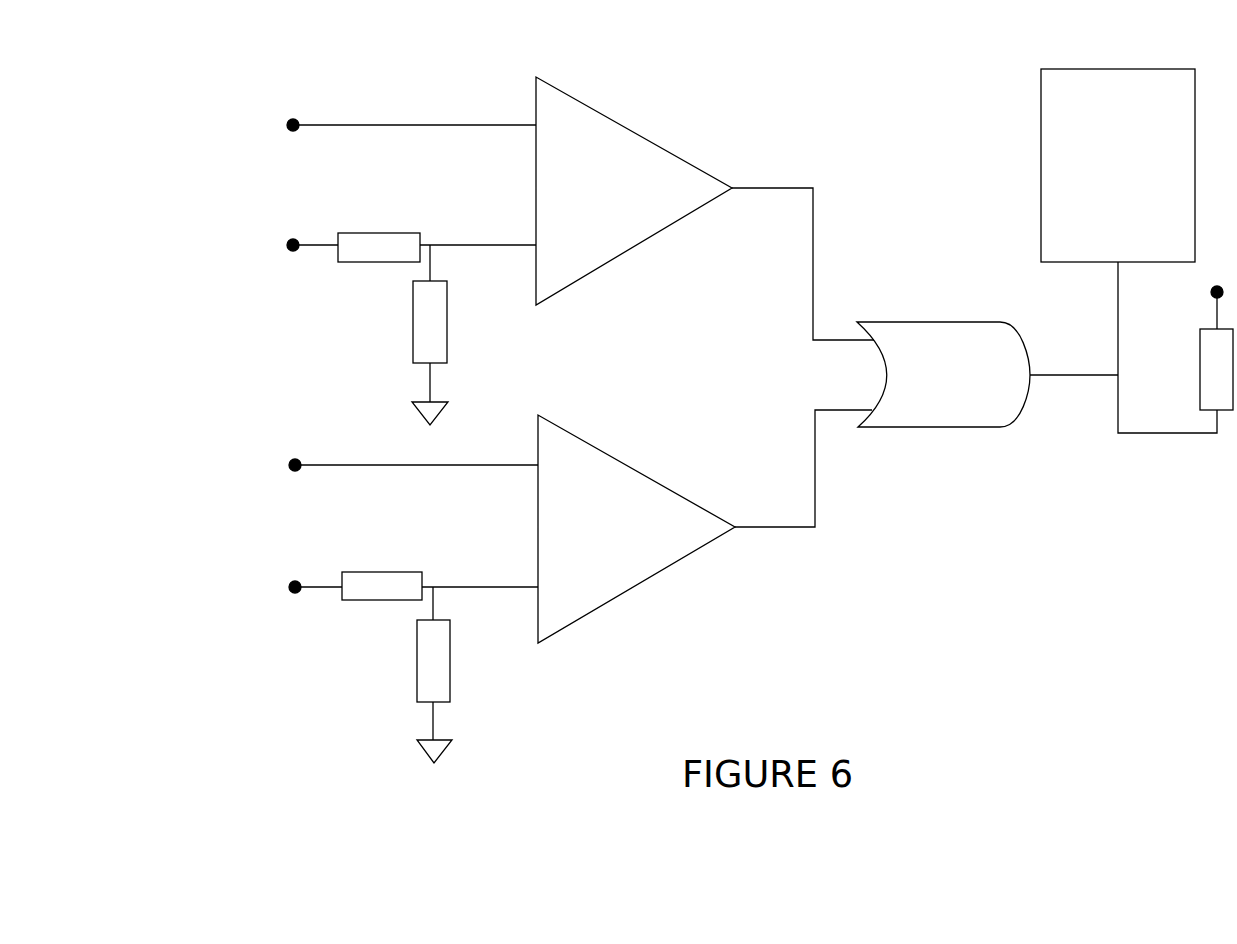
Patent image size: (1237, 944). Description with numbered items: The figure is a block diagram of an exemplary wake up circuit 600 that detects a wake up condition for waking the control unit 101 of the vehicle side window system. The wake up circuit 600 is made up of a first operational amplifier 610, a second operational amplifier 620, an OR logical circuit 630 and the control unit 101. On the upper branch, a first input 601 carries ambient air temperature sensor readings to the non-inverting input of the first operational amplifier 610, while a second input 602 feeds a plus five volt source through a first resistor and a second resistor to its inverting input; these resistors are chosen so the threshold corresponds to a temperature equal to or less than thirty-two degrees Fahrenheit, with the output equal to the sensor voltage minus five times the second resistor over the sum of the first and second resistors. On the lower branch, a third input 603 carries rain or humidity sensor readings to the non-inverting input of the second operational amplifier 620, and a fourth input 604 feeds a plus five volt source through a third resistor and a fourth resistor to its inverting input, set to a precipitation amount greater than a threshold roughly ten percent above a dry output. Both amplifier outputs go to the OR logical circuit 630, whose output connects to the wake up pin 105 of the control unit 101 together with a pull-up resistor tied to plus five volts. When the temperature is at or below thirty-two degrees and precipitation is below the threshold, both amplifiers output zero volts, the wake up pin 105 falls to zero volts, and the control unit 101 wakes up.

The wake up circuit 600 is at (841, 82).
The first input 601 is at (293, 132).
The second input 602 is at (293, 252).
The third input 603 is at (295, 472).
The fourth input 604 is at (295, 594).
The first operational amplifier 610 is at (633, 132).
The second operational amplifier 620 is at (635, 472).
The OR logical circuit 630 is at (922, 322).
The control unit 101 is at (1041, 113).
The wake up pin 105 is at (1117, 262).